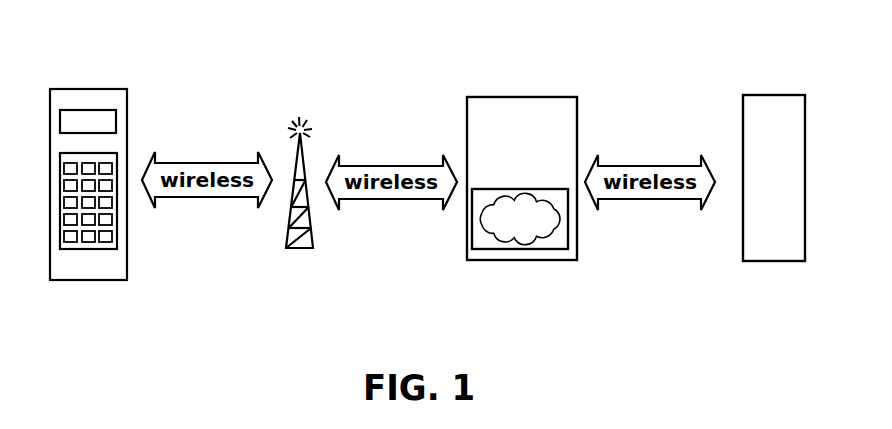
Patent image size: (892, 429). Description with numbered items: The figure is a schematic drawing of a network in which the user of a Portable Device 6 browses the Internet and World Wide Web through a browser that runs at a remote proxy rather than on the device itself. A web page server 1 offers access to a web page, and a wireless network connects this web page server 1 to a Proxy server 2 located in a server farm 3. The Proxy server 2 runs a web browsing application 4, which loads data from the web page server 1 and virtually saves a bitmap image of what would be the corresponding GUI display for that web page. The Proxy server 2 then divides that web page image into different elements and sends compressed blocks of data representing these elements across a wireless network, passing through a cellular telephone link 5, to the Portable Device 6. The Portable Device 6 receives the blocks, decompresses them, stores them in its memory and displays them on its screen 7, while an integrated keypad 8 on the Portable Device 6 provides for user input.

The web page server 1 is at (775, 107).
The Proxy server 2 is at (562, 242).
The server farm 3 is at (523, 112).
The web browsing application 4 is at (482, 227).
The cellular telephone link 5 is at (302, 127).
The Portable Device 6 is at (105, 102).
The screen 7 is at (73, 122).
The integrated keypad 8 is at (115, 243).